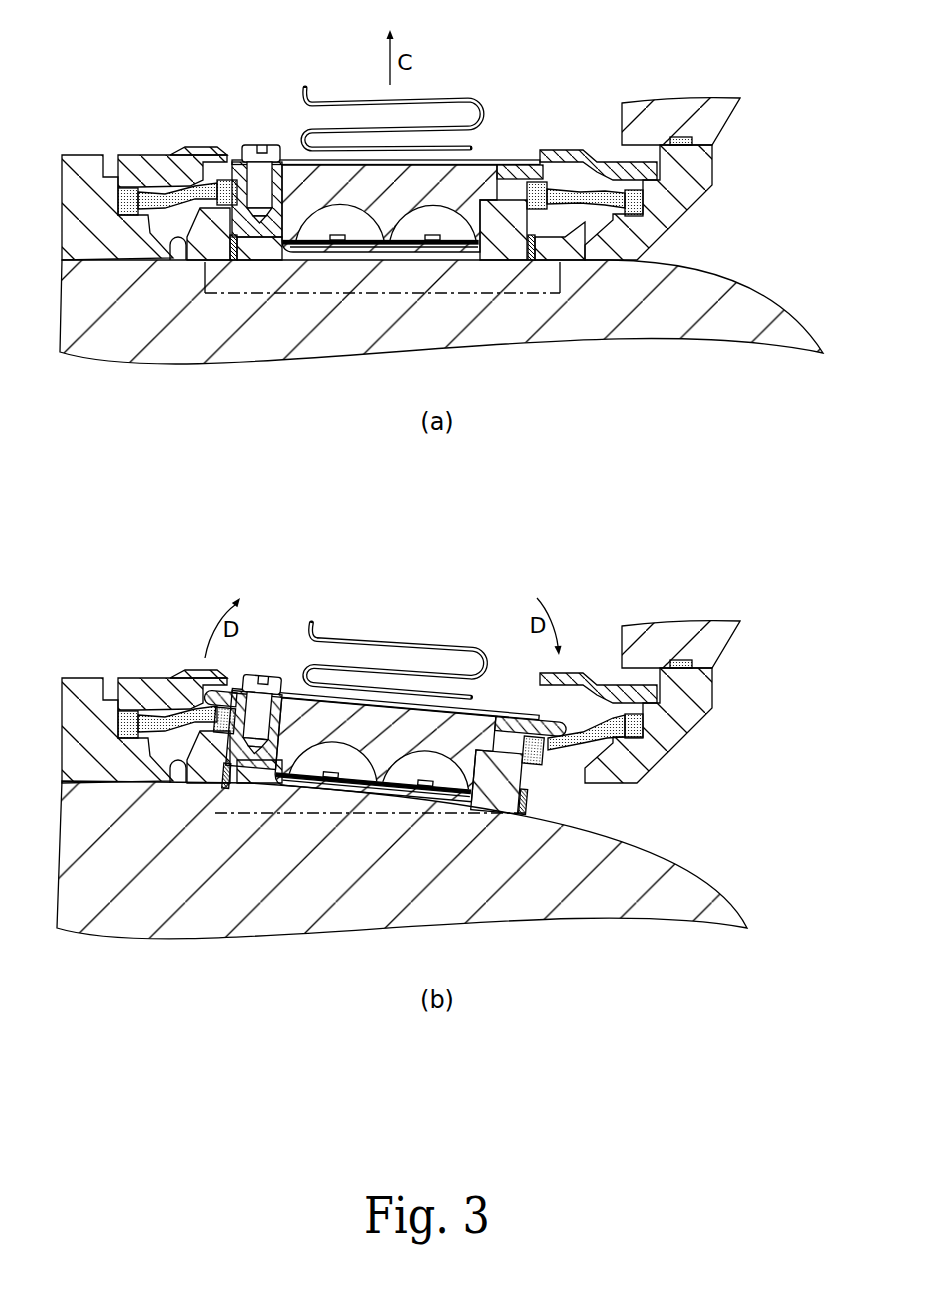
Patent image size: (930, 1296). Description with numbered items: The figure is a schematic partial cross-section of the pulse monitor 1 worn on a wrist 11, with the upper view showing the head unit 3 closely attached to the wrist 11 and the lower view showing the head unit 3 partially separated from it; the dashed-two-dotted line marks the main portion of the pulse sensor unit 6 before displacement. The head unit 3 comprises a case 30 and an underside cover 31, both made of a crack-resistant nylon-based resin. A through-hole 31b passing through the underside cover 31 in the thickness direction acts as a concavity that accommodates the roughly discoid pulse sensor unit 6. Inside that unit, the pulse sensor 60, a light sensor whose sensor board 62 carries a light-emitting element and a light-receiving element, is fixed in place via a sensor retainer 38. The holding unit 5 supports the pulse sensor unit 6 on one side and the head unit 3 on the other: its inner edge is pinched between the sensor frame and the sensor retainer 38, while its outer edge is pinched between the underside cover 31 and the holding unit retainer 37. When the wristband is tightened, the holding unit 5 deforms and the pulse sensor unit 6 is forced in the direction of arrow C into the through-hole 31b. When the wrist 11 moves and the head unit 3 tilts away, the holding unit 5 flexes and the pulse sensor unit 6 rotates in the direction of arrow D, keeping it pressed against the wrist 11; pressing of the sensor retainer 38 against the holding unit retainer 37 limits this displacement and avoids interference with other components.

The pulse monitor 1 is at (440, 469).
The head unit 3 is at (591, 128).
The holding unit 5 is at (582, 207).
The pulse sensor unit 6 is at (365, 271).
The wrist 11 is at (753, 297).
The case 30 is at (718, 125).
The underside cover 31 is at (680, 213).
The through-hole 31b is at (181, 265).
The holding unit retainer 37 is at (578, 150).
The sensor retainer 38 is at (540, 165).
The pulse sensor 60 is at (314, 234).
The sensor board 62 is at (337, 100).